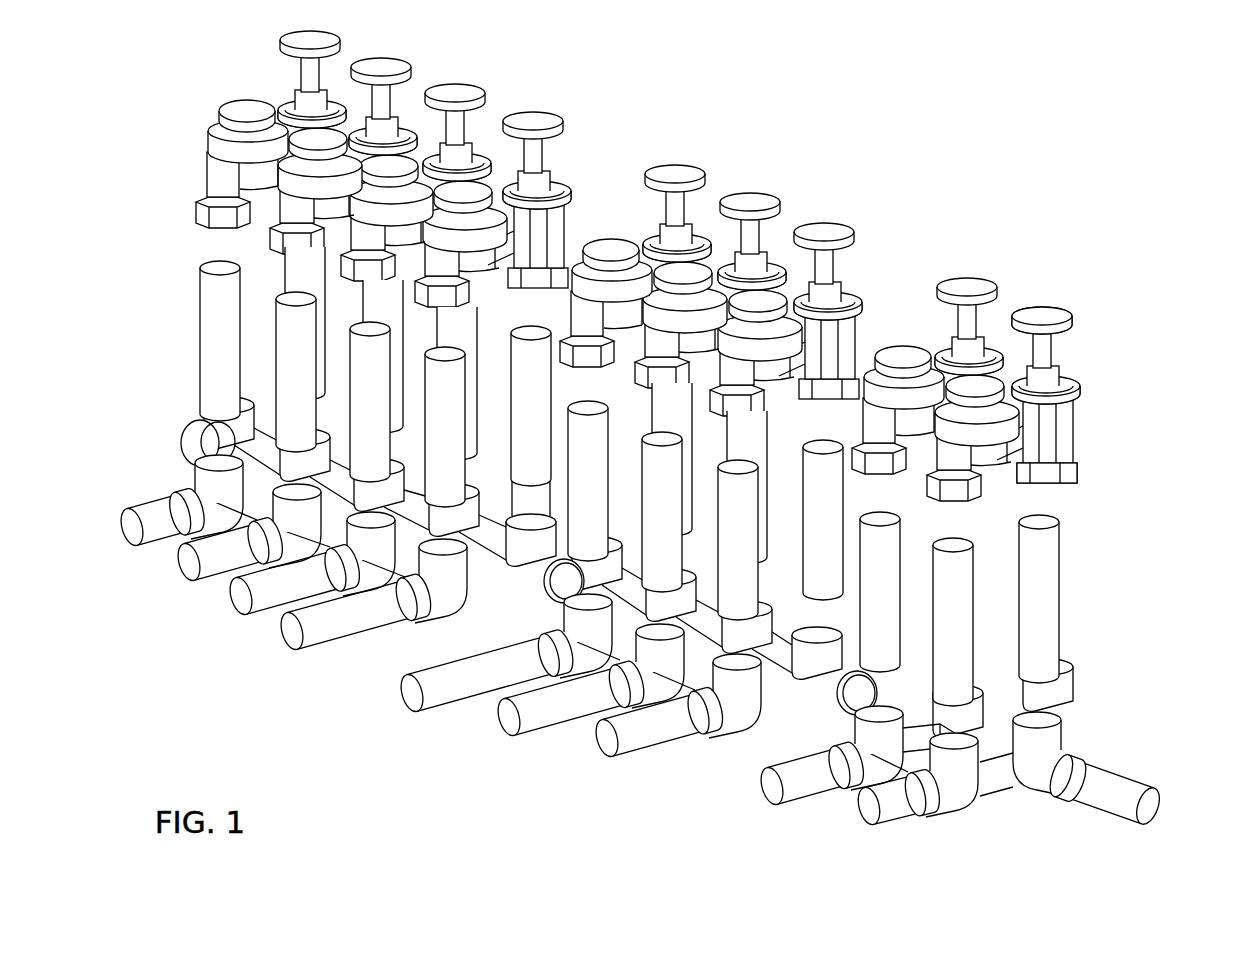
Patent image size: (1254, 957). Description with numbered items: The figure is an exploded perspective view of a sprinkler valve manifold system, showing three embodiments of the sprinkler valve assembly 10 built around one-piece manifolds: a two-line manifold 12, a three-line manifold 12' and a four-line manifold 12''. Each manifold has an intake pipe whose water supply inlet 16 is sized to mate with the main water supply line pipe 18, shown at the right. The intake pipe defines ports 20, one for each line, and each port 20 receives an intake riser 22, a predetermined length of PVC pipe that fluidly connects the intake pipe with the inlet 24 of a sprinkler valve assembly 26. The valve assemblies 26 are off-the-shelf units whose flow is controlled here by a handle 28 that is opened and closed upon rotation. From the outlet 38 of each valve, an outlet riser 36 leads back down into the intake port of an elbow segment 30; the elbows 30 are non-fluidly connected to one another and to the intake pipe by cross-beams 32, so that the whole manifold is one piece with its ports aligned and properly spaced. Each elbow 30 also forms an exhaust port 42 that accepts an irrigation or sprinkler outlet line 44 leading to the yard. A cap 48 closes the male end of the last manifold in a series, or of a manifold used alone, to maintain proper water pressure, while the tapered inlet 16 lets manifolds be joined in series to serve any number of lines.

The sprinkler valve assembly 10 is at (666, 474).
The two-line manifold 12 is at (968, 573).
The three-line manifold 12' is at (629, 505).
The four-line manifold 12'' is at (343, 386).
The water supply inlet 16 is at (1078, 763).
The main water supply line pipe 18 is at (1105, 797).
The port 20 is at (1040, 716).
The intake riser 22 is at (1049, 600).
The inlet 24 is at (1046, 484).
The sprinkler valve assembly 26 is at (1097, 378).
The handle 28 is at (1047, 315).
The elbow segment 30 is at (877, 748).
The cross-beam 32 is at (1003, 779).
The outlet riser 36 is at (942, 634).
The outlet 38 is at (962, 494).
The exhaust port 42 is at (925, 797).
The sprinkler outlet line 44 is at (773, 783).
The cap 48 is at (186, 444).